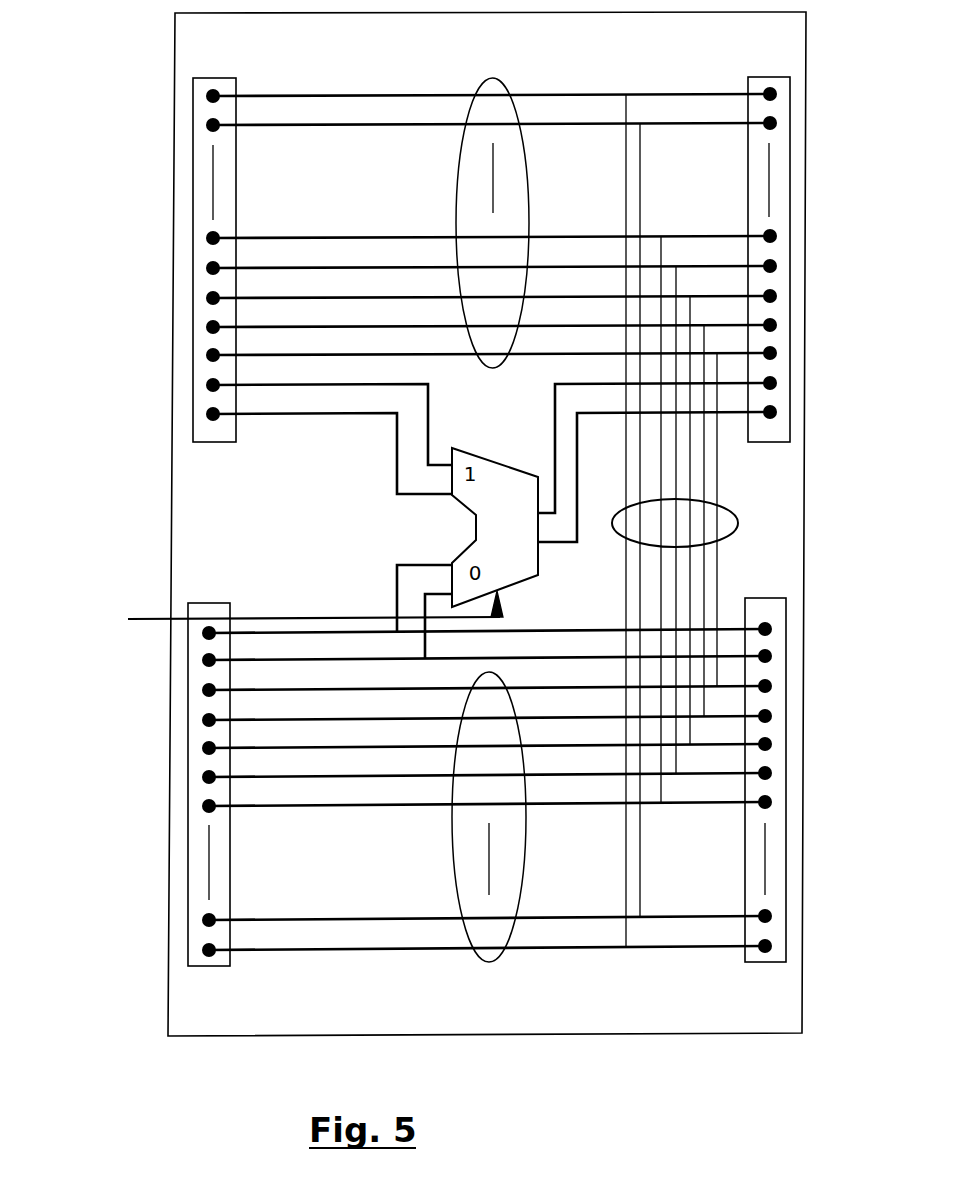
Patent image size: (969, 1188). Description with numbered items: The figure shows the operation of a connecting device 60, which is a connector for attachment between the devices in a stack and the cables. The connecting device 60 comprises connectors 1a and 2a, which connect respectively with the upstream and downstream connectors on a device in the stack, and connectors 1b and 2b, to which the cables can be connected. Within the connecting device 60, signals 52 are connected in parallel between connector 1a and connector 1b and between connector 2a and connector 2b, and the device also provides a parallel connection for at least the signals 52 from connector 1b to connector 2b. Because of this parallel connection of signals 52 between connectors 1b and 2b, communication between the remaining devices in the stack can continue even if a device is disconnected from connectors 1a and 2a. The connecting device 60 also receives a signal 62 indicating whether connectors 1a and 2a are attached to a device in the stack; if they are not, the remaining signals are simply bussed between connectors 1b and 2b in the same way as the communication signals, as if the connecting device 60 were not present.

The connector 1a is at (193, 145).
The connector 1b is at (792, 147).
The connector 2a is at (188, 690).
The connector 2b is at (787, 684).
The signals 52 is at (503, 75).
The connecting device 60 is at (160, 558).
The signal 62 is at (153, 620).